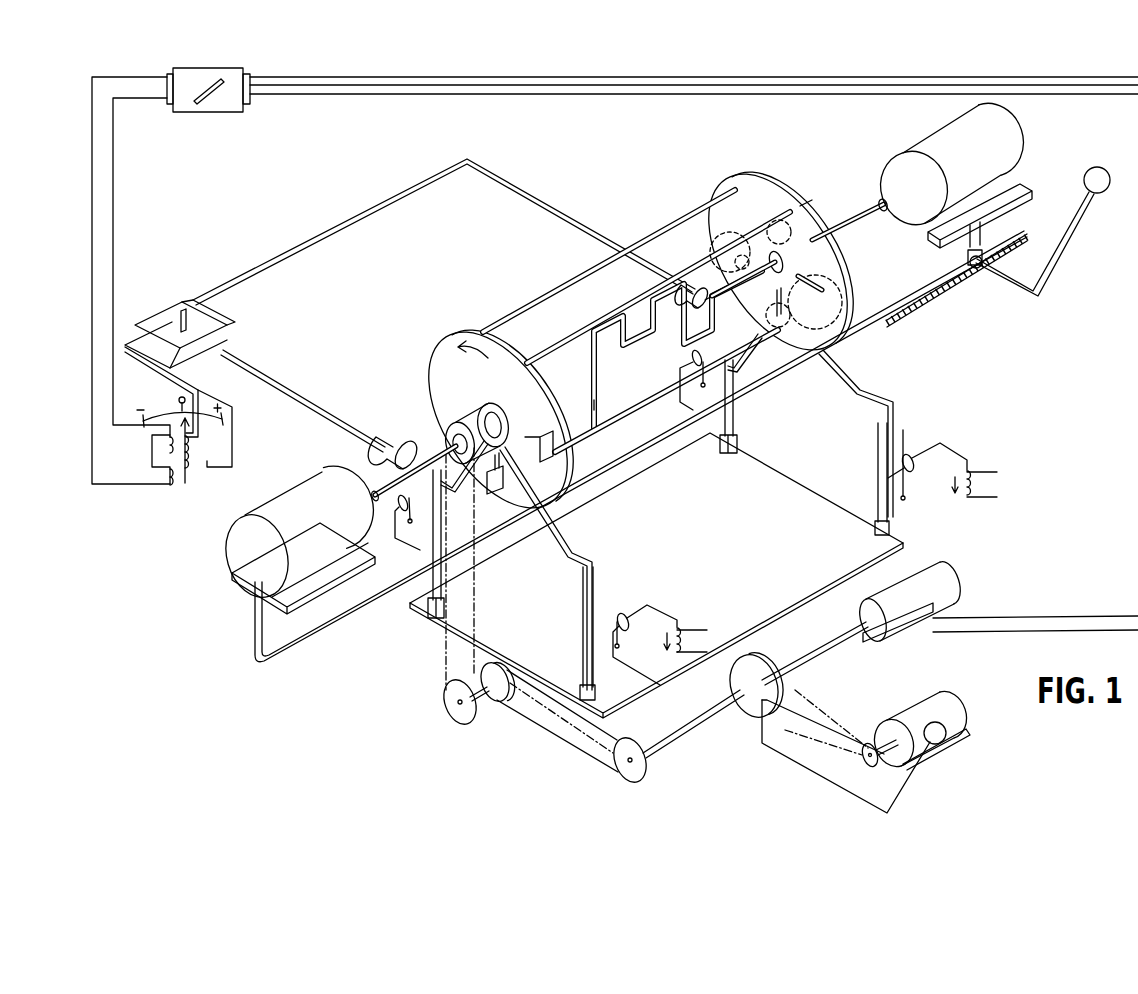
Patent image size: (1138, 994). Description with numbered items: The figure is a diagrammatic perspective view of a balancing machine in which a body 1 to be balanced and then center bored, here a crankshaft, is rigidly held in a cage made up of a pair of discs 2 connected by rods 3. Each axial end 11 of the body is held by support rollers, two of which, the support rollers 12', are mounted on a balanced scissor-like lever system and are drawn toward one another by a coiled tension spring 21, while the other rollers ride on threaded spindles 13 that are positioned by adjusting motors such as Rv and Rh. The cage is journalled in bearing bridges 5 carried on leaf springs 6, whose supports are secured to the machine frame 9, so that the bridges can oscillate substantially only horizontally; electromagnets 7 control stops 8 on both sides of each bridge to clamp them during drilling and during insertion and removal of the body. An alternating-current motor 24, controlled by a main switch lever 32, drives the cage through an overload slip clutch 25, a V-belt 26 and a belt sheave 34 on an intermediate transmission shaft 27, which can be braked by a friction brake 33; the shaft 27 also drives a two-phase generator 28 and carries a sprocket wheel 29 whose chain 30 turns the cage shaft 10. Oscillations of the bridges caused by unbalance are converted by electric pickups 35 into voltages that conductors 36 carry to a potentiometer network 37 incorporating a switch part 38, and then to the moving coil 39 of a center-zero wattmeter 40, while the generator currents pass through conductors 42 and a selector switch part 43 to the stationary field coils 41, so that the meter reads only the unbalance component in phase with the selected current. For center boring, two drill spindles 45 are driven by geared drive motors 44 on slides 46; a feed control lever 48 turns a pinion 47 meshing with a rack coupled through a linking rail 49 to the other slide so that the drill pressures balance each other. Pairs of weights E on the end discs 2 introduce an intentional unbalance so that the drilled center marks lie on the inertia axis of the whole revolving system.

The body 1 is at (575, 420).
The disc 2 is at (460, 330).
The rod 3 is at (575, 280).
The bearing bridge 5 is at (596, 560).
The leaf spring 6 is at (431, 538).
The electromagnet 7 is at (681, 626).
The stop 8 is at (400, 500).
The machine frame 9 is at (900, 545).
The cage shaft 10 is at (478, 415).
The axial end 11 is at (770, 272).
The support roller 12' is at (772, 239).
The threaded spindle 13 is at (838, 314).
The coiled tension spring 21 is at (808, 212).
The alternating-current motor 24 is at (922, 700).
The overload slip clutch 25 is at (866, 762).
The V-belt 26 is at (830, 705).
The intermediate transmission shaft 27 is at (490, 705).
The two-phase generator 28 is at (948, 577).
The sprocket wheel 29 is at (456, 712).
The chain 30 is at (480, 630).
The main switch lever 32 is at (915, 776).
The friction brake 33 is at (790, 700).
The belt sheave 34 is at (760, 665).
The electric pickup 35 is at (430, 442).
The conductor 36 is at (258, 275).
The potentiometer network 37 is at (168, 312).
The switch part 38 is at (148, 322).
The moving coil 39 is at (208, 468).
The center-zero wattmeter 40 is at (165, 406).
The stationary field coil 41 is at (155, 468).
The conductor 42 is at (300, 77).
The switch part 43 is at (236, 67).
The geared drive motor 44 is at (1012, 135).
The drill spindle 45 is at (436, 420).
The slide 46 is at (1002, 235).
The pinion 47 is at (965, 258).
The feed control lever 48 is at (1072, 228).
The linking rail 49 is at (355, 612).
The weight E is at (838, 276).
The adjusting motor Rv is at (712, 245).
The adjusting motor Rh is at (845, 300).